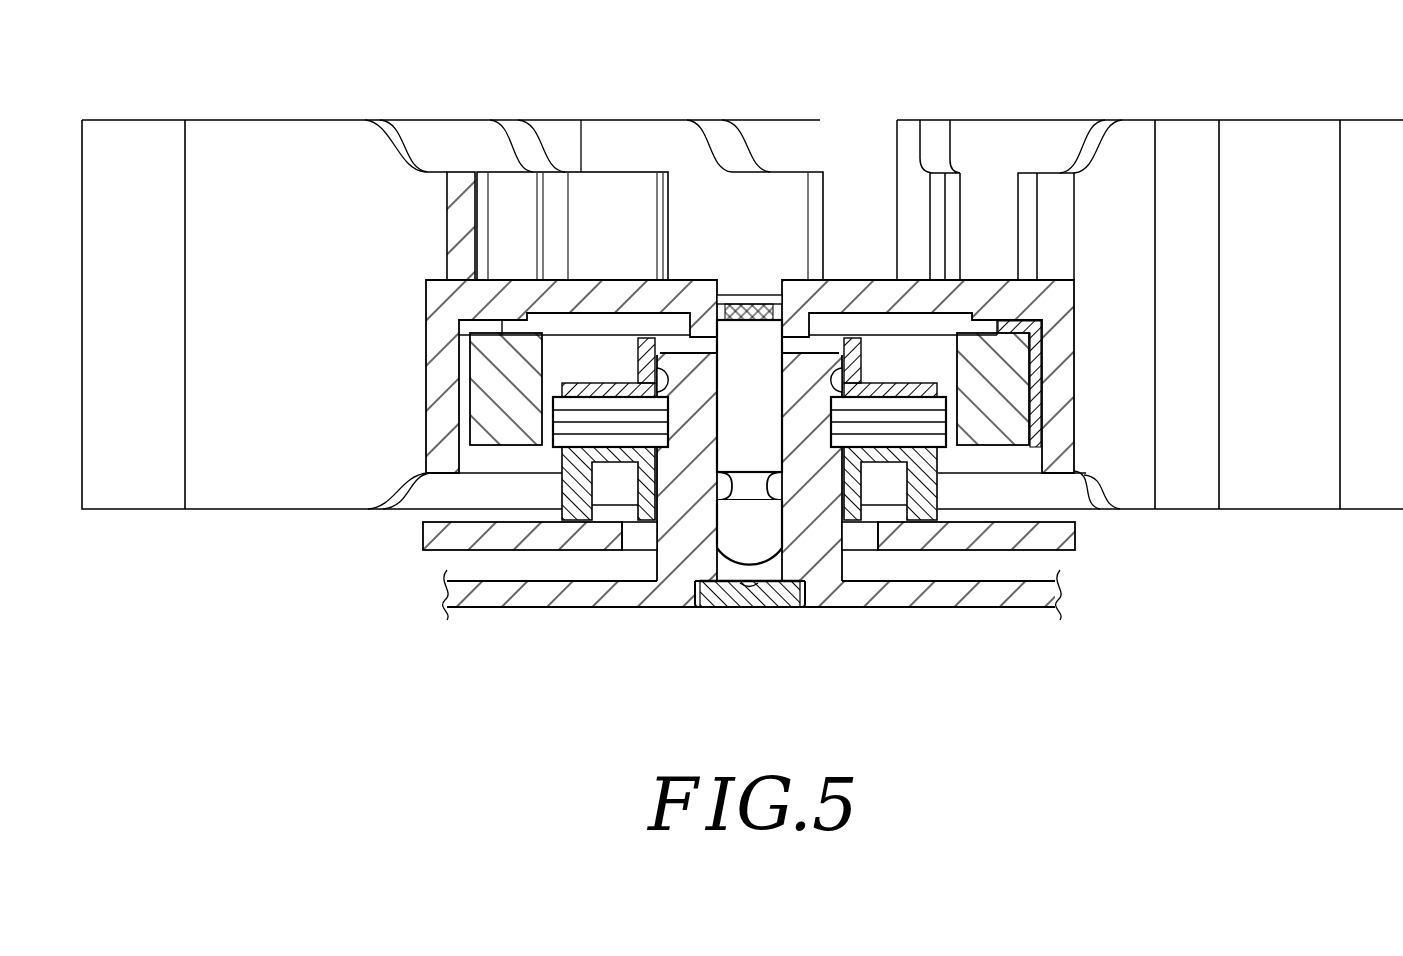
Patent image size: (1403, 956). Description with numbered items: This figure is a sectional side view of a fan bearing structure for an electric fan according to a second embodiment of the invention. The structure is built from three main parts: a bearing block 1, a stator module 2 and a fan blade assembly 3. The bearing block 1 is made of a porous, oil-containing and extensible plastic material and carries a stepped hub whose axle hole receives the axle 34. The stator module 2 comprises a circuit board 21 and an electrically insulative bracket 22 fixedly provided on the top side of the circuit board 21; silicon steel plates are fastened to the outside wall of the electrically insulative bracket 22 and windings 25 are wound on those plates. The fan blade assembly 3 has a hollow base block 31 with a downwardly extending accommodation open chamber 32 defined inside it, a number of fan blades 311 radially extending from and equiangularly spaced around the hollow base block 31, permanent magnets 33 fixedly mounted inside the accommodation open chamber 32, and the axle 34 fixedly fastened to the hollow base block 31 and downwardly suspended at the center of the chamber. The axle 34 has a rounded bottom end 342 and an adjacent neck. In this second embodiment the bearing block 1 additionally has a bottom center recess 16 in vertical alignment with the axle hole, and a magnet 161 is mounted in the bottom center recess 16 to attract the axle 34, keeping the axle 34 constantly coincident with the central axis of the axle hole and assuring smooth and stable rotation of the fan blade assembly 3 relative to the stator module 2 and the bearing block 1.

The bearing block 1 is at (468, 618).
The stator module 2 is at (758, 571).
The fan blade assembly 3 is at (366, 92).
The bottom center recess 16 is at (787, 593).
The circuit board 21 is at (1065, 538).
The electrically insulative bracket 22 is at (940, 492).
The windings 25 is at (940, 410).
The hollow base block 31 is at (860, 293).
The accommodation open chamber 32 is at (558, 367).
The permanent magnets 33 is at (482, 355).
The axle 34 is at (696, 449).
The magnet 161 is at (752, 600).
The fan blades 311 is at (1274, 139).
The rounded bottom end 342 is at (733, 566).